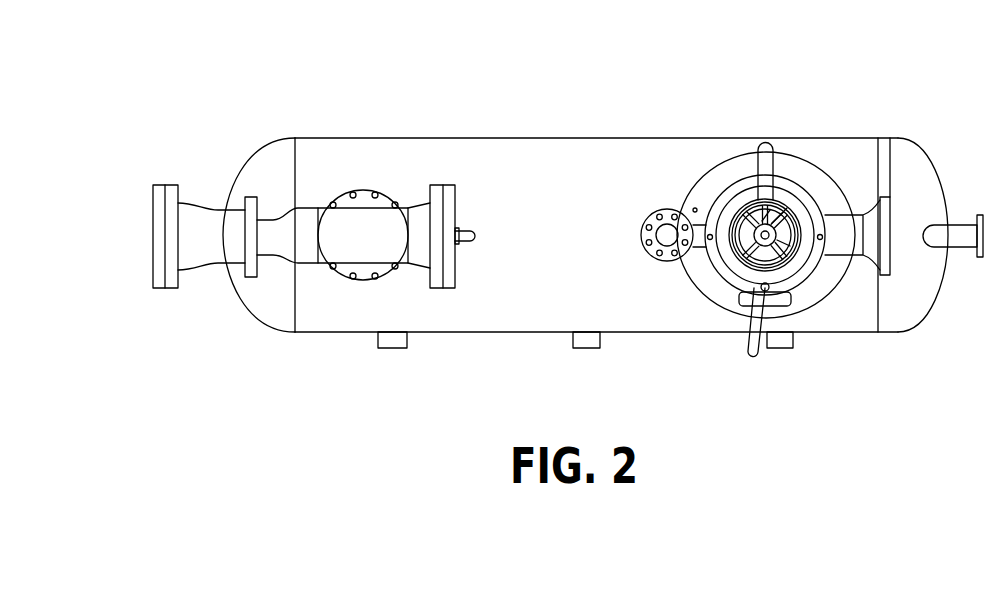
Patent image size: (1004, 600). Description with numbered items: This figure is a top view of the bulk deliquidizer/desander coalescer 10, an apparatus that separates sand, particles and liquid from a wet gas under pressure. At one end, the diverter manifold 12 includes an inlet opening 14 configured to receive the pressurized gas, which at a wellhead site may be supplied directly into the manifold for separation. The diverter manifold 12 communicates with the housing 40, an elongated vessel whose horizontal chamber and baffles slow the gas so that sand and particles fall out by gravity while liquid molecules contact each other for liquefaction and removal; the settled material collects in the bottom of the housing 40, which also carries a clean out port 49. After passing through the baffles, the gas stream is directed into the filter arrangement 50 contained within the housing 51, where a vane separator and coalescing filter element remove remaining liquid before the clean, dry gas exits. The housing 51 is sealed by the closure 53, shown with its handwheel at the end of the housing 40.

The bulk deliquidizer/desander coalescer 10 is at (148, 129).
The diverter manifold 12 is at (343, 218).
The inlet opening 14 is at (228, 217).
The housing 40 is at (543, 138).
The clean out port 49 is at (152, 218).
The filter arrangement 50 is at (765, 241).
The housing 51 is at (802, 157).
The closure 53 is at (793, 263).